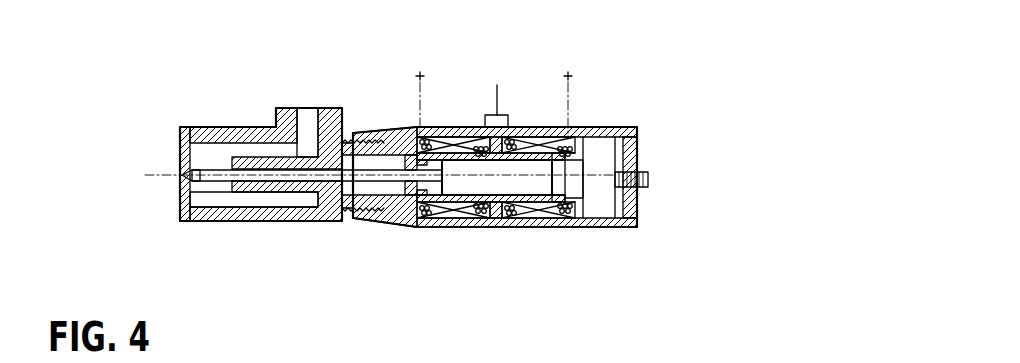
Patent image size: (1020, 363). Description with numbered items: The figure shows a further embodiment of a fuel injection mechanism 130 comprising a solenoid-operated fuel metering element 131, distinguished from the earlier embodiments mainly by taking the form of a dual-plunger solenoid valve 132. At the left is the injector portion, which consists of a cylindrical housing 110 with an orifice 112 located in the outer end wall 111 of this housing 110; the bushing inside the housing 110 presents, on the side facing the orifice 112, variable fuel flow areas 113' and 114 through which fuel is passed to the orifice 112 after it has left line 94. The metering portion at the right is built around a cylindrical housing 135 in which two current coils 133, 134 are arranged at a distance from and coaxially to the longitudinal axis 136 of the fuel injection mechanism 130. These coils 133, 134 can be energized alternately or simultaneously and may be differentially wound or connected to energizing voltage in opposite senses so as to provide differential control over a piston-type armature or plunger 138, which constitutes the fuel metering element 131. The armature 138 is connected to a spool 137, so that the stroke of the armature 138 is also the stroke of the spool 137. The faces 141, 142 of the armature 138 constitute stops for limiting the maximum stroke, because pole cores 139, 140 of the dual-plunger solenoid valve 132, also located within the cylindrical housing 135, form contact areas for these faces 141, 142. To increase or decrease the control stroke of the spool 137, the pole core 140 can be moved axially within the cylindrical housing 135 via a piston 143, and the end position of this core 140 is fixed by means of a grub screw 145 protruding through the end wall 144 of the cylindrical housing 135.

The line 94 is at (307, 60).
The cylindrical housing 110 is at (226, 212).
The outer end wall 111 is at (180, 139).
The orifice 112 is at (186, 174).
The variable fuel flow area 113' is at (266, 132).
The variable fuel flow area 114 is at (210, 192).
The fuel injection mechanism 130 is at (300, 228).
The solenoid-operated fuel metering element 131 is at (393, 188).
The dual-plunger solenoid valve 132 is at (498, 232).
The current coil 133 is at (442, 134).
The current coil 134 is at (567, 213).
The cylindrical housing 135 is at (618, 227).
The longitudinal axis 136 is at (157, 176).
The spool 137 is at (343, 182).
The armature 138 is at (516, 196).
The pole core 139 is at (460, 218).
The pole core 140 is at (575, 170).
The face of armature 141 is at (440, 196).
The face of armature 142 is at (557, 200).
The piston 143 is at (605, 150).
The end wall 144 is at (637, 208).
The grub screw 145 is at (648, 180).